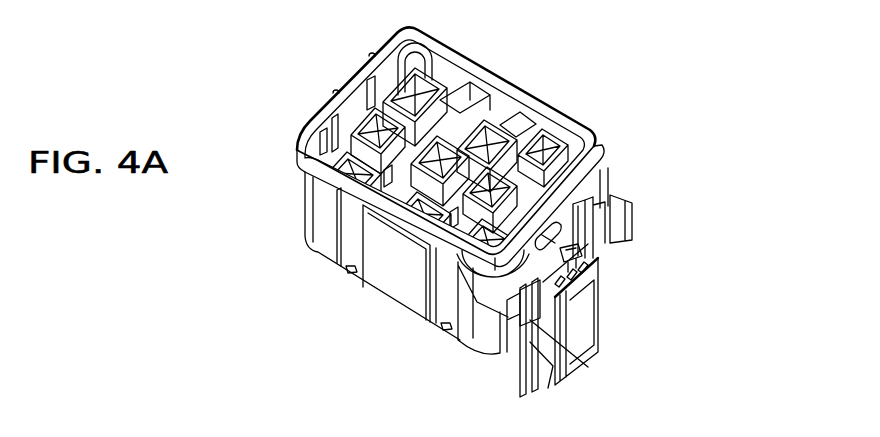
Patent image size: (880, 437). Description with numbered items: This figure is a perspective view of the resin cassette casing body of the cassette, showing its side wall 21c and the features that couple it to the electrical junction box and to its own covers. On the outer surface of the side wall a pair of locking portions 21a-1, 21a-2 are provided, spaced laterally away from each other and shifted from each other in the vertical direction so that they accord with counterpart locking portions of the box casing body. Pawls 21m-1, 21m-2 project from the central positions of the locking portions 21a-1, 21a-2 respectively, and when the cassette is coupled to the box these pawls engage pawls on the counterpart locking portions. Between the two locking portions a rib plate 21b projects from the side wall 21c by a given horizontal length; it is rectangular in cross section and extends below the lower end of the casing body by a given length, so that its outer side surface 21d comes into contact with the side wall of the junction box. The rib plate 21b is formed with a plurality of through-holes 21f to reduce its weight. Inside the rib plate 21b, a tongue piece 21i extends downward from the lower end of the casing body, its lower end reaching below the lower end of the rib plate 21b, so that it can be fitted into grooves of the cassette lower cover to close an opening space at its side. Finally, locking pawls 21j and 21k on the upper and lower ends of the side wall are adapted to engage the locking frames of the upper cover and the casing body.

The locking portion 21a-1 is at (634, 212).
The locking portion 21a-2 is at (488, 333).
The rib plate 21b is at (600, 326).
The side wall 21c is at (571, 258).
The outer side surface 21d is at (588, 297).
The through-holes 21f is at (598, 262).
The tongue piece 21i is at (527, 372).
The locking pawl 21j is at (543, 232).
The locking pawl 21k is at (442, 326).
The pawl 21m-1 is at (608, 233).
The pawl 21m-2 is at (583, 368).